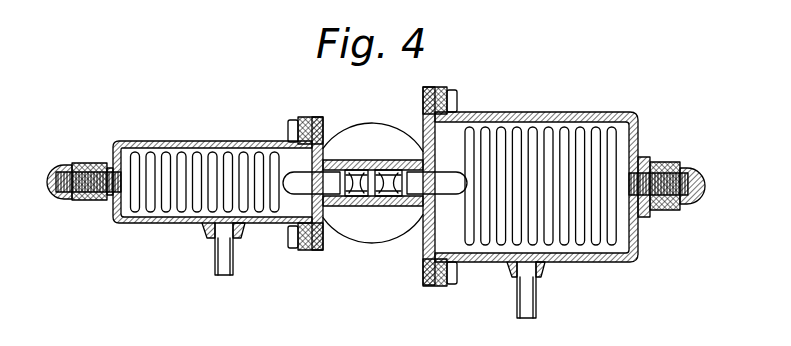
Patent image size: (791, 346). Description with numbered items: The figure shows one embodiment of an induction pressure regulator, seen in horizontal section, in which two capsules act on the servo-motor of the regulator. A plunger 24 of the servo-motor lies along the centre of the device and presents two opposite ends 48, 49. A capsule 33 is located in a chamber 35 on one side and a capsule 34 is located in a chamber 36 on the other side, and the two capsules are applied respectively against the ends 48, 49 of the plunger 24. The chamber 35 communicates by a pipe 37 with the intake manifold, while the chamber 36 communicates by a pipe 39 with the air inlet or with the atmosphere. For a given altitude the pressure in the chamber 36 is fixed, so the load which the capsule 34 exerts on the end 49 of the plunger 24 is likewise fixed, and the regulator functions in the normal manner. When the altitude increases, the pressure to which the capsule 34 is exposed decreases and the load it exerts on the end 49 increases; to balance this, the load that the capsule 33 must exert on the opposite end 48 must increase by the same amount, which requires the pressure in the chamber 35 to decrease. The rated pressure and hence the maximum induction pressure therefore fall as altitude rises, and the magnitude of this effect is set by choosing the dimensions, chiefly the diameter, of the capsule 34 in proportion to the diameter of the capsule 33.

The plunger 24 is at (413, 197).
The capsule 33 is at (512, 167).
The capsule 34 is at (193, 175).
The chamber 35 is at (492, 247).
The chamber 36 is at (144, 224).
The pipe 37 is at (525, 308).
The pipe 39 is at (222, 263).
The plunger end 48 is at (464, 188).
The plunger end 49 is at (279, 212).